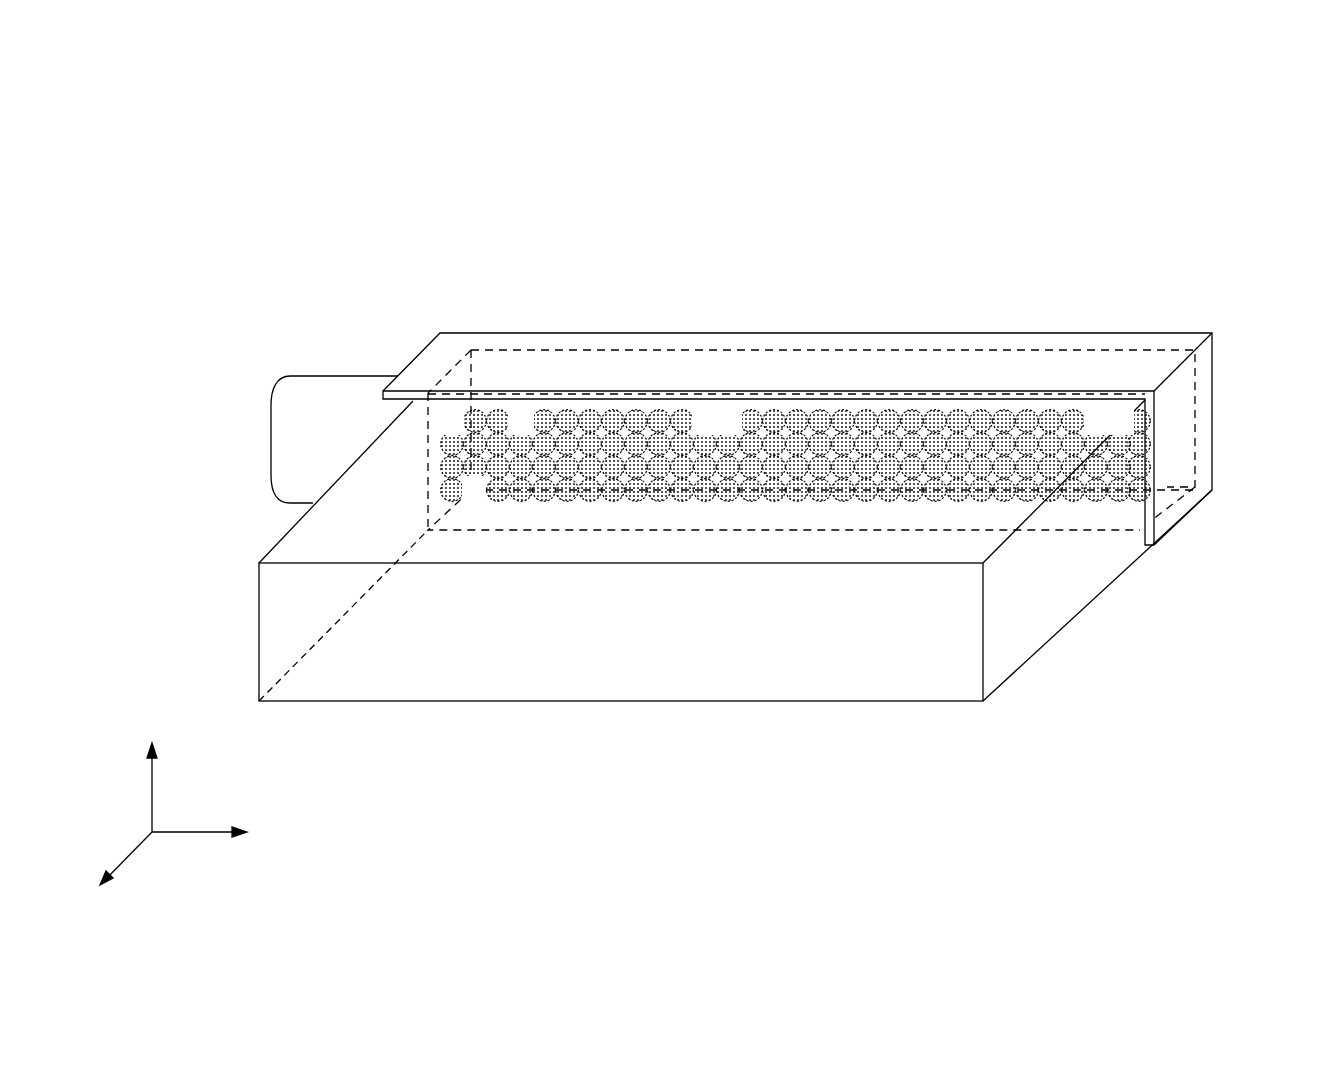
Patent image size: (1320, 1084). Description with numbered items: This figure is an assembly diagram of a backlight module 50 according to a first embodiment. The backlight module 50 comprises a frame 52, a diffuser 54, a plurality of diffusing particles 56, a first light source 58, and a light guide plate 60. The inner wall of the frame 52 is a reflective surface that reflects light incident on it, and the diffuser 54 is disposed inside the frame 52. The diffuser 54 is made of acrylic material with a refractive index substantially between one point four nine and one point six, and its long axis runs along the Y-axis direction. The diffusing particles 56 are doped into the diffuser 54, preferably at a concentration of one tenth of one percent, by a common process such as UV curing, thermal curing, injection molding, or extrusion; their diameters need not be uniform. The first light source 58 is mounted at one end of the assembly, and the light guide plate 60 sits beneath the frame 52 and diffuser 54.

The backlight module 50 is at (1162, 148).
The frame 52 is at (832, 342).
The diffuser 54 is at (562, 363).
The diffusing particles 56 is at (658, 413).
The first light source 58 is at (347, 393).
The light guide plate 60 is at (518, 671).